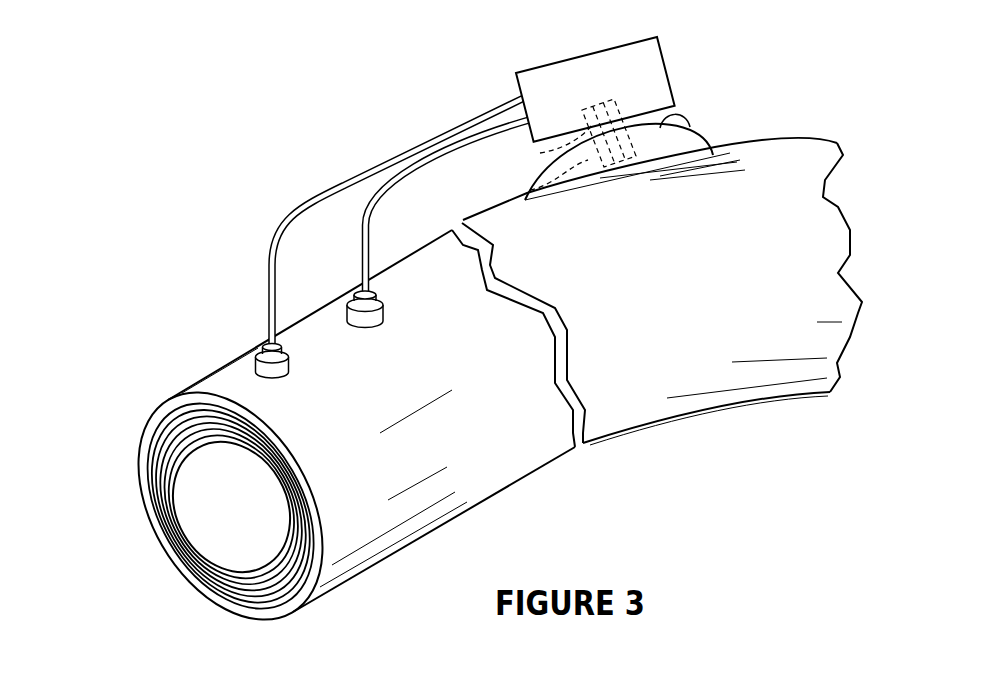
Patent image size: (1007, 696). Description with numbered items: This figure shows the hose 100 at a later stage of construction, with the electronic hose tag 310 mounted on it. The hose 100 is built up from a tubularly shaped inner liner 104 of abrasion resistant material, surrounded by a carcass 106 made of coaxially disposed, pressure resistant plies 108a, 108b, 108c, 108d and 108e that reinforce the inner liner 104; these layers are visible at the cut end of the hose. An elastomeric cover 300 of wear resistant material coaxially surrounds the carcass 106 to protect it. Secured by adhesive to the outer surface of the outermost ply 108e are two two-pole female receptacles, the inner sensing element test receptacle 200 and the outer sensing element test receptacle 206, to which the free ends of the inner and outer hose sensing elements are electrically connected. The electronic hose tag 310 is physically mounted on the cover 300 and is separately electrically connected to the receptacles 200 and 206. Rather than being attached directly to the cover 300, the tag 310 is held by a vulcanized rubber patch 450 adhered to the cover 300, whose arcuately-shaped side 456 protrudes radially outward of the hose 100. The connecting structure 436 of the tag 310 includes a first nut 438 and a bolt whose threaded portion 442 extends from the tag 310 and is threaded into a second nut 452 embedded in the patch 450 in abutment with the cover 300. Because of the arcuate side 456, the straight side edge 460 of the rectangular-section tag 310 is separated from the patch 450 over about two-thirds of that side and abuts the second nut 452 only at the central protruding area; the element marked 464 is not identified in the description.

The hose 100 is at (206, 358).
The inner liner 104 is at (207, 549).
The carcass 106 is at (171, 519).
The ply 108a is at (219, 565).
The ply 108b is at (224, 577).
The ply 108c is at (229, 588).
The ply 108d is at (233, 597).
The ply 108e is at (216, 602).
The inner sensing element test receptacle 200 is at (288, 366).
The outer sensing element test receptacle 206 is at (383, 312).
The cover 300 is at (290, 616).
The electronic hose tag 310 is at (685, 76).
The connecting structure 436 is at (609, 82).
The first internally threaded nut 438 is at (614, 100).
The threaded portion of bolt 442 is at (540, 153).
The vulcanized rubber patch 450 is at (708, 122).
The second internally threaded nut 452 is at (530, 190).
The arcuately-shaped side of patch 456 is at (712, 113).
The straight side edge of tag 460 is at (676, 110).
The inner layer edge 464 is at (688, 150).